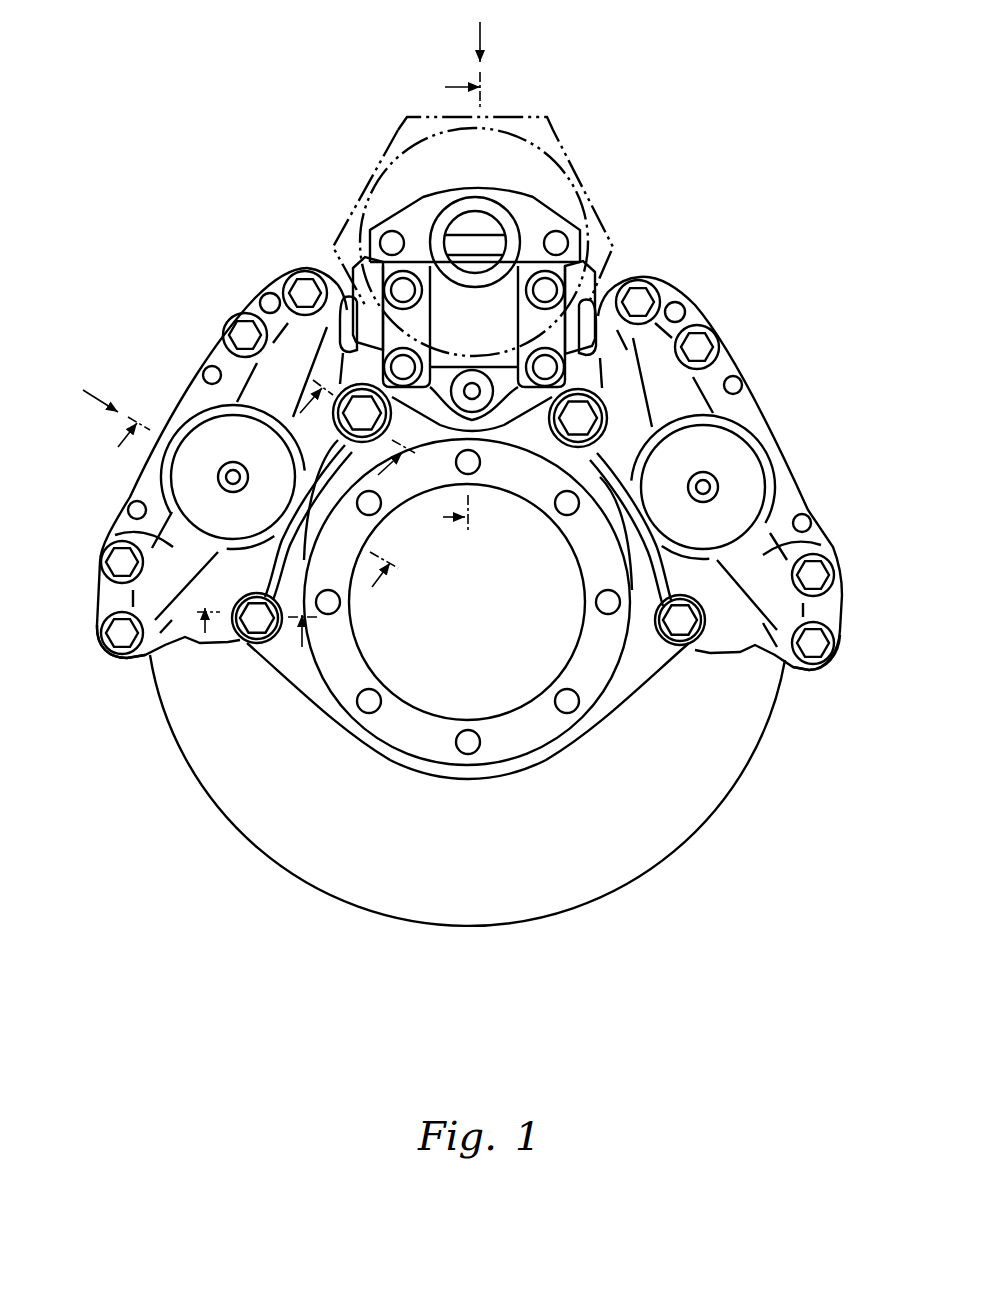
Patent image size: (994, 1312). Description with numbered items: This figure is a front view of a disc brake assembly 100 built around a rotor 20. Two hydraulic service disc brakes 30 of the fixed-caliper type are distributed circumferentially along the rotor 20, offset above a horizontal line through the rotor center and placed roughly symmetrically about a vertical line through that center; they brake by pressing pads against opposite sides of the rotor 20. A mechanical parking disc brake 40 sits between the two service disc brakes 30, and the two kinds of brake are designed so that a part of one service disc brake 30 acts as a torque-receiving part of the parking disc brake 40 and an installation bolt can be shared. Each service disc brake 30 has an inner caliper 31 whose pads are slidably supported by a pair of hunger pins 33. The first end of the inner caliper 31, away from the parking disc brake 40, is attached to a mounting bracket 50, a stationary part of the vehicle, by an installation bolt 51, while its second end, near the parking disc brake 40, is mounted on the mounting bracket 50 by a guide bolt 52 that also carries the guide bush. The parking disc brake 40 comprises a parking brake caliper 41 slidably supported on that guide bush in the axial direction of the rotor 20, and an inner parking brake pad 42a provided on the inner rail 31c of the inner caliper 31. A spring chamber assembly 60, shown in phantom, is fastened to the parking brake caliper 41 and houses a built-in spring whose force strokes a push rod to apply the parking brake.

The disc brake assembly 100 is at (470, 506).
The rotor 20 is at (472, 914).
The service disc brake 30 is at (250, 290).
The inner caliper 31 is at (115, 534).
The inner rail 31c is at (335, 275).
The hunger pin 33 is at (207, 367).
The parking disc brake 40 is at (533, 227).
The parking brake caliper 41 is at (533, 212).
The inner parking brake pad 42a is at (620, 268).
The mounting bracket 50 is at (655, 662).
The installation bolt 51 is at (262, 610).
The guide bolt 52 is at (360, 428).
The spring chamber assembly 60 is at (527, 117).